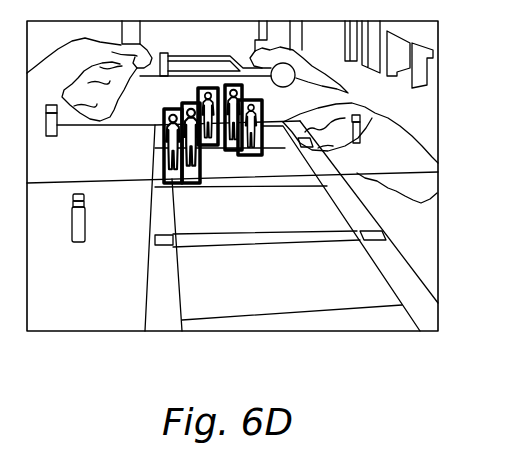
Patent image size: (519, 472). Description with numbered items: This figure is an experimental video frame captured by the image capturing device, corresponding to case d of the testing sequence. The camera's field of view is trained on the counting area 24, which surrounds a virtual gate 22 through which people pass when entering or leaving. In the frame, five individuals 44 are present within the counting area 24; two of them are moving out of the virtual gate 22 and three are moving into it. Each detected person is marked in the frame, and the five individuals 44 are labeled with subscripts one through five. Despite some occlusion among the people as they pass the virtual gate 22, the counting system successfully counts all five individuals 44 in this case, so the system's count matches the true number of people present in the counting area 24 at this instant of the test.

The virtual gate 22 is at (419, 172).
The counting area 24 is at (422, 306).
The individuals 44 is at (234, 201).